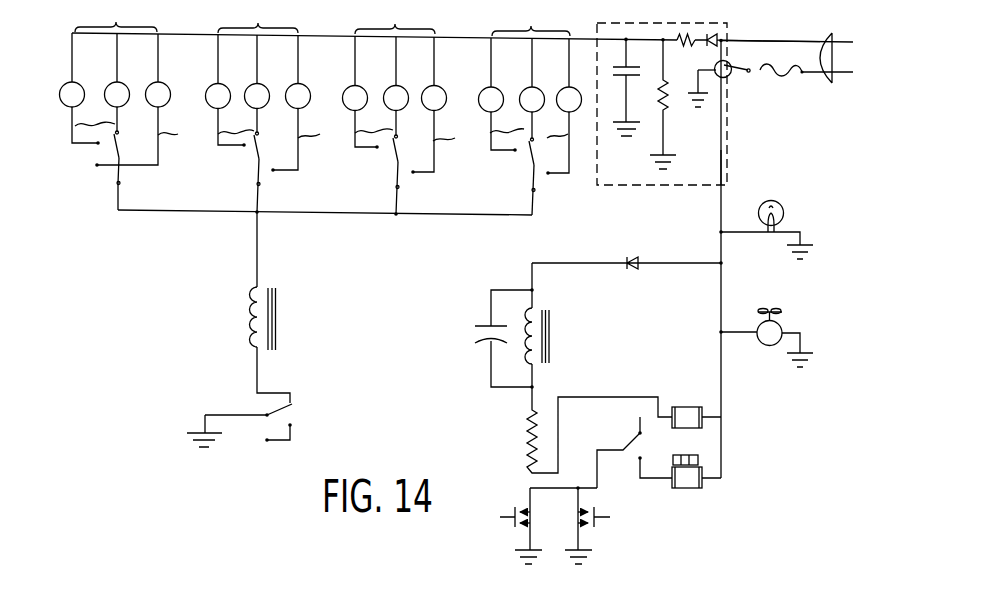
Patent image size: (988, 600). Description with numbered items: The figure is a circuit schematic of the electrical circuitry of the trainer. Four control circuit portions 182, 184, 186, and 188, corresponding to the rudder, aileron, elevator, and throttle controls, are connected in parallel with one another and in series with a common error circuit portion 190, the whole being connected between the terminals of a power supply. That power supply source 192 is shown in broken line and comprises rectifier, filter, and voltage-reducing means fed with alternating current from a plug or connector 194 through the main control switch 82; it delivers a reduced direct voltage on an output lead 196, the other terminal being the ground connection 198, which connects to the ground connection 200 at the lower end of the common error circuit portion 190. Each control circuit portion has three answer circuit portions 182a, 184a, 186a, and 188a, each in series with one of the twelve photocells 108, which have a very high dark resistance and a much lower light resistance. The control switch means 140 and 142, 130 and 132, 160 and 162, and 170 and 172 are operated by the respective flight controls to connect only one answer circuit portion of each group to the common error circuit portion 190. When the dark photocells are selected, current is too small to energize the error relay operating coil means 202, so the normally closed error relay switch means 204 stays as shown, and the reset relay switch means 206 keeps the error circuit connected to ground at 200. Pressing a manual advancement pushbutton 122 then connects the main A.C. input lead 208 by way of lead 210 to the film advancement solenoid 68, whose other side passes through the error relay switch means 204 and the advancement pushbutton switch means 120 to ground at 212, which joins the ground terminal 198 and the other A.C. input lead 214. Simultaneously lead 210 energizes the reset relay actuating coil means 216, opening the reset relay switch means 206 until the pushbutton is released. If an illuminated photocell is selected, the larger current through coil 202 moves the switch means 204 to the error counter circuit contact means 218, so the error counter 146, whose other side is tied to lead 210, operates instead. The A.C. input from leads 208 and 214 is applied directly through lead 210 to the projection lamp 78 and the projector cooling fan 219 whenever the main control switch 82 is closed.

The film advancement solenoid 68 is at (687, 407).
The projection lamp 78 is at (782, 202).
The main control switch 82 is at (729, 65).
The photocells 108 is at (111, 80).
The advancement pushbutton switch means 120 is at (555, 530).
The manual advancement pushbuttons 122 is at (500, 518).
The control switch means 130 is at (252, 152).
The control switch means 132 is at (253, 175).
The control switch means 140 is at (112, 150).
The control switch means 142 is at (113, 173).
The error counter 146 is at (694, 488).
The control switch means 160 is at (391, 153).
The control switch means 162 is at (391, 177).
The control switch means 170 is at (528, 155).
The control switch means 172 is at (528, 180).
The control circuit portion 182 is at (115, 83).
The answer circuit portions 182a is at (139, 121).
The control circuit portion 184 is at (258, 86).
The answer circuit portions 184a is at (279, 125).
The control circuit portion 186 is at (395, 88).
The answer circuit portions 186a is at (415, 126).
The control circuit portion 188 is at (530, 88).
The answer circuit portions 188a is at (531, 125).
The common error circuit portion 190 is at (257, 247).
The power supply source 192 is at (728, 27).
The plug or connector 194 is at (825, 84).
The output lead 196 is at (582, 40).
The ground connection 198 is at (704, 101).
The ground connection 200 is at (198, 441).
The error relay operating coil means 202 is at (266, 300).
The error relay switch means 204 is at (624, 440).
The reset relay switch means 206 is at (292, 409).
The main A.C. input lead 208 is at (780, 42).
The lead 210 is at (721, 162).
The ground 212 is at (573, 557).
The A.C. input lead 214 is at (758, 73).
The reset relay actuating coil means 216 is at (543, 325).
The error counter circuit contact means 218 is at (638, 461).
The projector cooling fan 219 is at (763, 348).